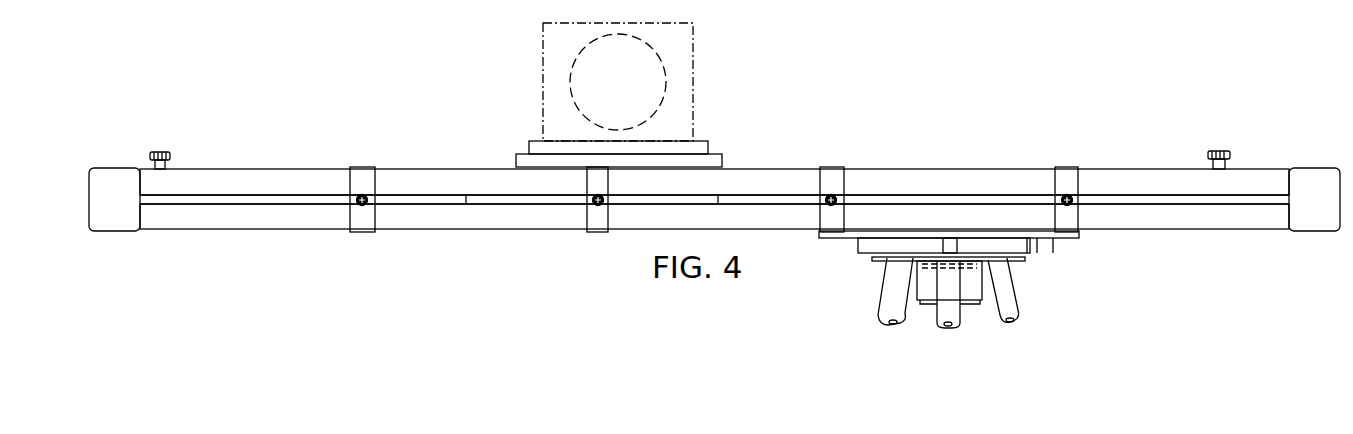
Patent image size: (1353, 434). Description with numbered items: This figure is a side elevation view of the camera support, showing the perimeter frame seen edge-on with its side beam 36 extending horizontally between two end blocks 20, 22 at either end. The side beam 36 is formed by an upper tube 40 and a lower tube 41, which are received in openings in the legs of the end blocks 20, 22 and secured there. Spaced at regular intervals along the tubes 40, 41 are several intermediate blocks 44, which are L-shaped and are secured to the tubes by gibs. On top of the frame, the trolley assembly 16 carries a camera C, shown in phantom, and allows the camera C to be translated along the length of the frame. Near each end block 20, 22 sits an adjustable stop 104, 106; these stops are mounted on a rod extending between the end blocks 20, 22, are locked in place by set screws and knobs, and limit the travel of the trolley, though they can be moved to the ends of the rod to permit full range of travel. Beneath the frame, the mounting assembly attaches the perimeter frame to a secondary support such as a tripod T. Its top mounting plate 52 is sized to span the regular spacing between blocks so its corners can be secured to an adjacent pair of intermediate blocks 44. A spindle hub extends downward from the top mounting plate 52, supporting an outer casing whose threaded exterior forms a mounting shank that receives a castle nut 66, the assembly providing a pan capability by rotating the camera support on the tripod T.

The end block 22 is at (121, 160).
The adjustable stop 106 is at (153, 150).
The trolley assembly 16 is at (514, 143).
The camera C is at (693, 36).
The intermediate block 44 is at (832, 167).
The tube 40 is at (1128, 169).
The adjustable stop 104 is at (1221, 152).
The end block 20 is at (1308, 160).
The tube 41 is at (1124, 218).
The side beam 36 is at (1198, 229).
The top mounting plate 52 is at (860, 244).
The tripod T is at (885, 290).
The castle nut 66 is at (970, 293).